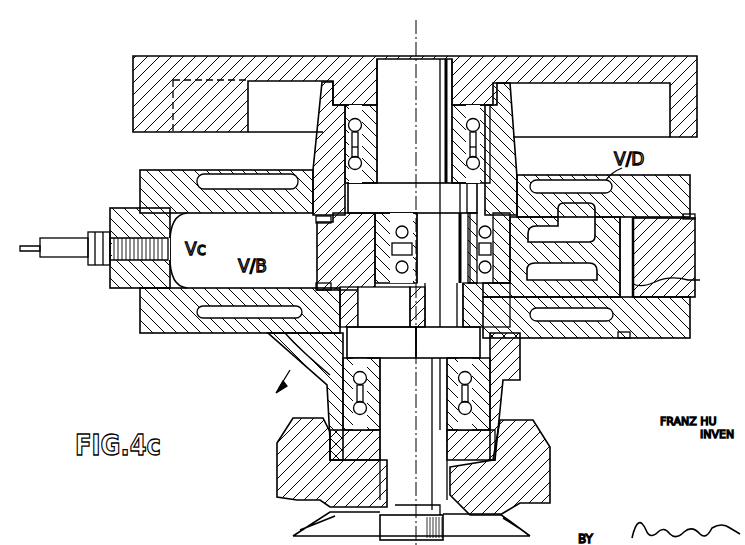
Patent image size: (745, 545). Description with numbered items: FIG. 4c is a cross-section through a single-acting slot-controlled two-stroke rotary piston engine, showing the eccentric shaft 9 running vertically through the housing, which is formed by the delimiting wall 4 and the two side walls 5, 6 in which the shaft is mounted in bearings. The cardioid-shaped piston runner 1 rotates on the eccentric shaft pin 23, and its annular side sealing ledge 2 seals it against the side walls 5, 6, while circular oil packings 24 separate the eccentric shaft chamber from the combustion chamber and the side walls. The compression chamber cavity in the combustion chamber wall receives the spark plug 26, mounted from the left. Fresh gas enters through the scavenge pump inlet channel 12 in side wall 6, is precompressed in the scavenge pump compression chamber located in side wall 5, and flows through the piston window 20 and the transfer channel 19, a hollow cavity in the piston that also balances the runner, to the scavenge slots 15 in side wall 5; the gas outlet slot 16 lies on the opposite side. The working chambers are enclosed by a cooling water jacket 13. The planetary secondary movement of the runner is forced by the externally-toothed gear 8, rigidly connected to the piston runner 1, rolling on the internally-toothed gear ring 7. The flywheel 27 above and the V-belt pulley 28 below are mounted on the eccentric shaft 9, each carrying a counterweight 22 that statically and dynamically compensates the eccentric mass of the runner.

The piston runner 1 is at (318, 258).
The side sealing ledge 2 is at (316, 222).
The delimiting wall 4 is at (606, 315).
The side wall 5 is at (226, 194).
The side wall 6 is at (228, 288).
The internally-toothed gear ring 7 is at (381, 342).
The externally-toothed gear 8 is at (438, 342).
The eccentric shaft 9 is at (432, 72).
The scavenge pump inlet channel 12 is at (525, 338).
The cooling water jacket 13 is at (590, 330).
The scavenge slots 15 is at (272, 174).
The gas outlet slot 16 is at (268, 343).
The transfer channel 19 is at (548, 186).
The piston window 20 is at (572, 192).
The counterweight 22 is at (197, 72).
The eccentric shaft pin 23 is at (400, 262).
The oil packings 24 is at (311, 178).
The spark plug 26 is at (70, 252).
The flywheel 27 is at (308, 66).
The V-belt pulley 28 is at (545, 480).